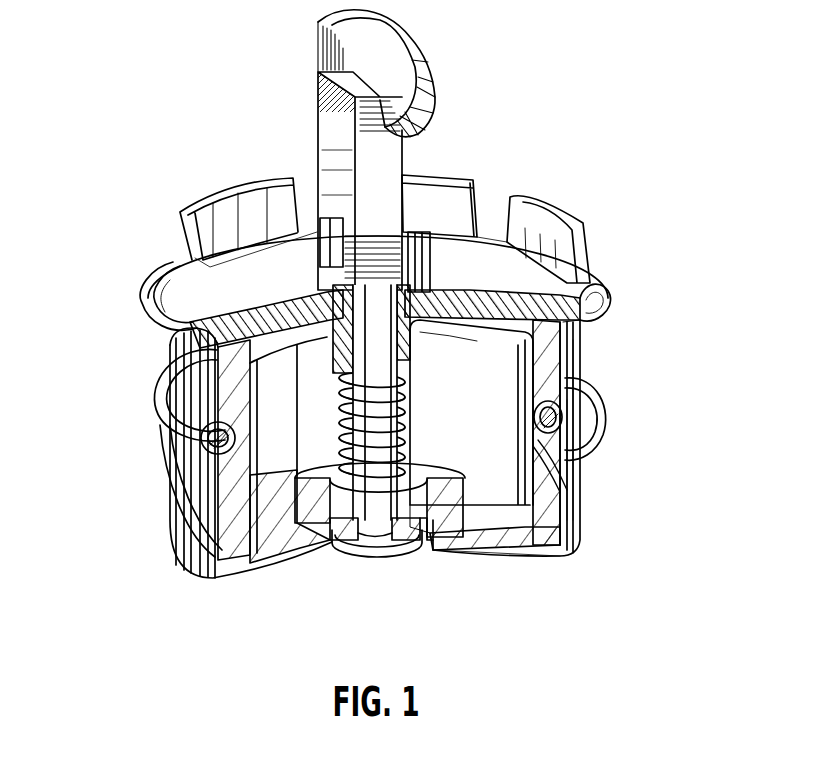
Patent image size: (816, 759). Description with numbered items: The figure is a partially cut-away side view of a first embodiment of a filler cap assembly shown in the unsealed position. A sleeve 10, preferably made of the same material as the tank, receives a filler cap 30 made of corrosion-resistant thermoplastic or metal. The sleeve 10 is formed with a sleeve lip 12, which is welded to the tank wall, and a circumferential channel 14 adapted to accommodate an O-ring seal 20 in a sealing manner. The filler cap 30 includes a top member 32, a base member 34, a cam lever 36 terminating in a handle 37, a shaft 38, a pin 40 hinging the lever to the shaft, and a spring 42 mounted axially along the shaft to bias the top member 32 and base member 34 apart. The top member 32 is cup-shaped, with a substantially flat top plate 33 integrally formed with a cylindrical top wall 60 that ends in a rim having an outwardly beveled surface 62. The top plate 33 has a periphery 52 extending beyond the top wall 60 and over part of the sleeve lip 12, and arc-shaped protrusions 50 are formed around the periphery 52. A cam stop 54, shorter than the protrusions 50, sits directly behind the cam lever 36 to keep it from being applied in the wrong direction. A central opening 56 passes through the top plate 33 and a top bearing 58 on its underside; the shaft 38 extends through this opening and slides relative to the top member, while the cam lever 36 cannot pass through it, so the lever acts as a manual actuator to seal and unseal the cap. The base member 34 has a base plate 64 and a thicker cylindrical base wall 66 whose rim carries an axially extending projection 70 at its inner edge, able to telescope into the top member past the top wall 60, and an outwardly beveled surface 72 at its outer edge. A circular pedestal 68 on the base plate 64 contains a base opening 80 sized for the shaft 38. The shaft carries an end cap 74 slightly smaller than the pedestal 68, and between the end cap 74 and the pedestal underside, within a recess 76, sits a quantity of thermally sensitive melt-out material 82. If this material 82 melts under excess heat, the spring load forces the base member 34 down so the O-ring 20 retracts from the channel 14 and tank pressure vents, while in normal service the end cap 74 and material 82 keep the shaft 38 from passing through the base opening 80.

The sleeve 10 is at (590, 458).
The sleeve lip 12 is at (612, 301).
The circumferential channel 14 is at (612, 388).
The O-ring seal 20 is at (570, 427).
The filler cap 30 is at (600, 202).
The top member 32 is at (146, 268).
The top plate 33 is at (210, 267).
The base member 34 is at (552, 572).
The cam lever 36 is at (330, 127).
The handle 37 is at (398, 26).
The shaft 38 is at (343, 390).
The pin 40 is at (392, 202).
The spring 42 is at (422, 467).
The arc-shaped protrusions 50 is at (212, 197).
The periphery 52 is at (597, 282).
The cam stop 54 is at (428, 258).
The central opening 56 is at (333, 358).
The top bearing 58 is at (327, 323).
The top wall 60 is at (548, 362).
The outwardly beveled surface 62 is at (217, 390).
The base plate 64 is at (502, 538).
The base wall 66 is at (237, 518).
The pedestal 68 is at (265, 468).
The axially extending projection 70 is at (520, 422).
The outwardly beveled surface 72 is at (563, 483).
The end cap 74 is at (373, 557).
The recess 76 is at (427, 527).
The base opening 80 is at (300, 553).
The thermally sensitive melt-out material 82 is at (387, 557).